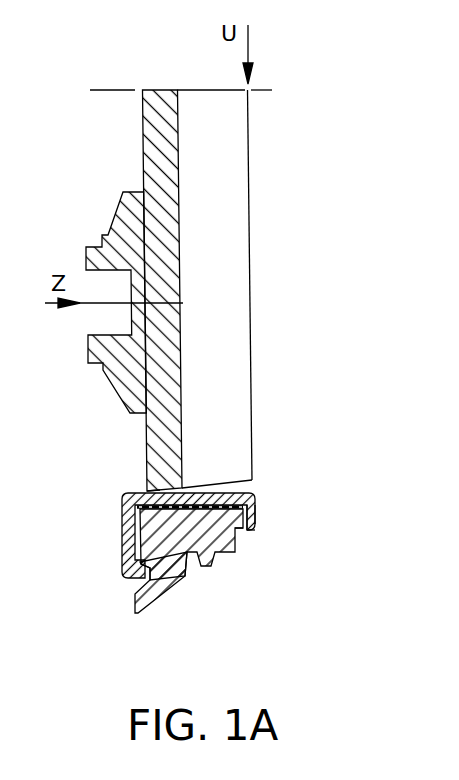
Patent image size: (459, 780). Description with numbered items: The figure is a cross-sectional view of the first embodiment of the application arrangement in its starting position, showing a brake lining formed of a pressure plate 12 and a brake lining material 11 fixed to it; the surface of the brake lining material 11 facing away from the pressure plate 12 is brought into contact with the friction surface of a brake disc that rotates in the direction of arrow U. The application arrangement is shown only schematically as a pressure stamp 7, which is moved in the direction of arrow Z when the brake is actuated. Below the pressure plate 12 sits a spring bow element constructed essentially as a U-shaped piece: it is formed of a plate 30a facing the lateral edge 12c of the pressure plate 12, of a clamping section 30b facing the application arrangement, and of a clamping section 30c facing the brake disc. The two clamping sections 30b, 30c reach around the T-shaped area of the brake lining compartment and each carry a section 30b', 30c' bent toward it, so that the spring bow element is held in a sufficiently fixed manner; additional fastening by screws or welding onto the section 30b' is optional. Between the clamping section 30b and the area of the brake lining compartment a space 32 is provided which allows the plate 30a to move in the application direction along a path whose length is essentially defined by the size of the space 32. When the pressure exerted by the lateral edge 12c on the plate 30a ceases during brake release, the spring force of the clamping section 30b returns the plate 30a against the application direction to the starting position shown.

The pressure stamp 7 is at (124, 193).
The brake lining material 11 is at (220, 177).
The pressure plate 12 is at (158, 124).
The lateral edge of the pressure plate 12c is at (147, 477).
The space 32 is at (123, 516).
The plate 30a is at (251, 489).
The clamping section 30b is at (140, 546).
The bent section 30b' is at (112, 606).
The clamping section 30c is at (287, 519).
The bent section 30c' is at (267, 572).